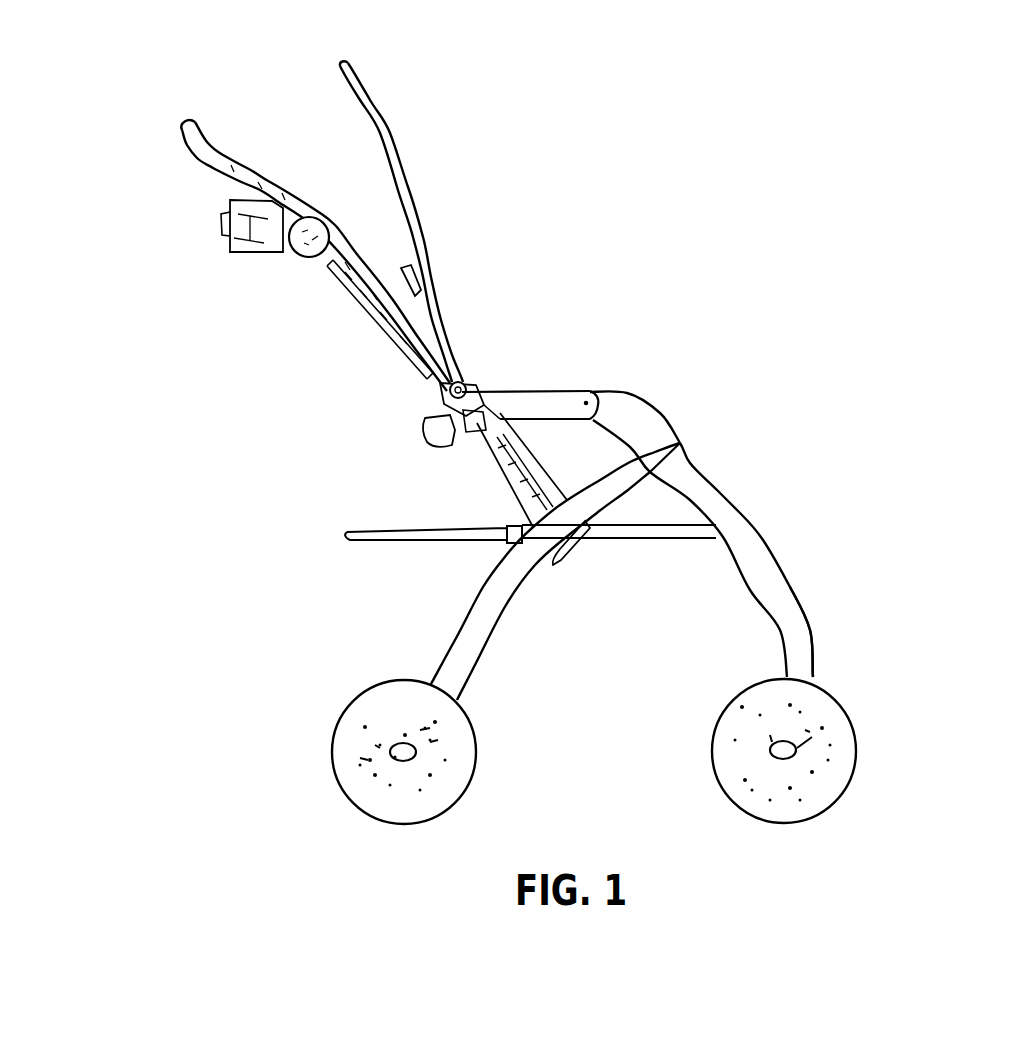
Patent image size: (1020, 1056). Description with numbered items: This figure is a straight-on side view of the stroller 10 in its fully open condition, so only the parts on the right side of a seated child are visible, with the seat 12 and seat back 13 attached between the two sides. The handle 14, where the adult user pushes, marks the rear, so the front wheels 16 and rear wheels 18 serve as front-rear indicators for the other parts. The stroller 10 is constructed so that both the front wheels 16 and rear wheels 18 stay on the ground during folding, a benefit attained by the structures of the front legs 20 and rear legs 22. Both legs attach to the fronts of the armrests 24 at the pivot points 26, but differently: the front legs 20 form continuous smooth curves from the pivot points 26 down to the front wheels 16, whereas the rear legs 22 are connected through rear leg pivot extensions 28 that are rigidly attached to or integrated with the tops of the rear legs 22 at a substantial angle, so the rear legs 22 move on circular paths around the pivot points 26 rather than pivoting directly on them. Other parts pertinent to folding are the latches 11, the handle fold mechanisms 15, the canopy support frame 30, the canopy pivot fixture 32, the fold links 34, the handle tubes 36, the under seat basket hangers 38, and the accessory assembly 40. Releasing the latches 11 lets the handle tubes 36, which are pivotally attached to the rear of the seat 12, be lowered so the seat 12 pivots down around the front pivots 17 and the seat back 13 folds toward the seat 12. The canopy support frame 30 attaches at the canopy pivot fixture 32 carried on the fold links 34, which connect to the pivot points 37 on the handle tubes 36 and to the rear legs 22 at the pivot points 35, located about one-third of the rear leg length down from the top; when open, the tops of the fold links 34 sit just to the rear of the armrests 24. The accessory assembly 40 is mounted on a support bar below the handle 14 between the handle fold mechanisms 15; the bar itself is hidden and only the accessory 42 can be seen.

The stroller 10 is at (636, 110).
The latches 11 is at (562, 560).
The seat 12 is at (672, 540).
The seat back 13 is at (455, 296).
The handle 14 is at (198, 123).
The handle fold mechanisms 15 is at (296, 255).
The front wheels 16 is at (840, 702).
The front pivots 17 is at (737, 525).
The rear wheels 18 is at (337, 723).
The front legs 20 is at (803, 594).
The rear legs 22 is at (482, 588).
The armrests 24 is at (518, 394).
The pivot points 26 is at (586, 401).
The rear leg pivot extensions 28 is at (623, 390).
The canopy support frame 30 is at (401, 197).
The canopy pivot fixture 32 is at (446, 388).
The fold links 34 is at (532, 466).
The pivot points 35 is at (652, 465).
The handle tubes 36 is at (385, 322).
The pivot points 37 is at (452, 447).
The under seat basket hangers 38 is at (355, 538).
The accessory assembly 40 is at (186, 237).
The accessory 42 is at (231, 200).